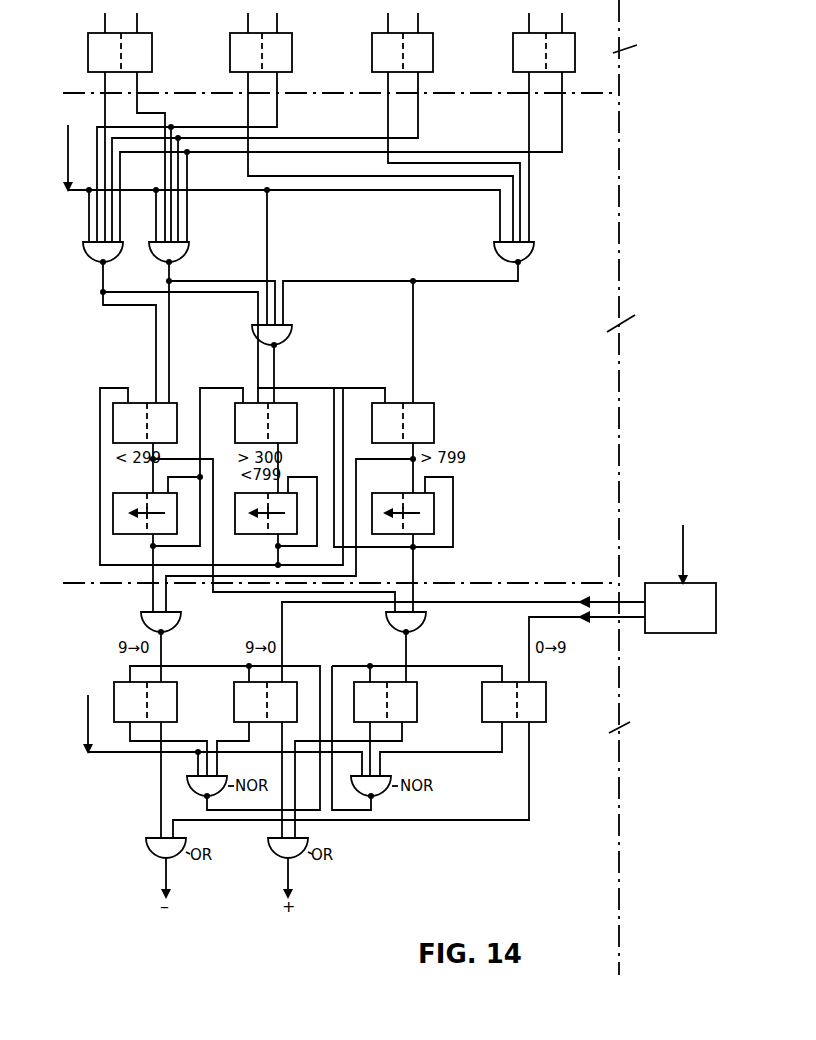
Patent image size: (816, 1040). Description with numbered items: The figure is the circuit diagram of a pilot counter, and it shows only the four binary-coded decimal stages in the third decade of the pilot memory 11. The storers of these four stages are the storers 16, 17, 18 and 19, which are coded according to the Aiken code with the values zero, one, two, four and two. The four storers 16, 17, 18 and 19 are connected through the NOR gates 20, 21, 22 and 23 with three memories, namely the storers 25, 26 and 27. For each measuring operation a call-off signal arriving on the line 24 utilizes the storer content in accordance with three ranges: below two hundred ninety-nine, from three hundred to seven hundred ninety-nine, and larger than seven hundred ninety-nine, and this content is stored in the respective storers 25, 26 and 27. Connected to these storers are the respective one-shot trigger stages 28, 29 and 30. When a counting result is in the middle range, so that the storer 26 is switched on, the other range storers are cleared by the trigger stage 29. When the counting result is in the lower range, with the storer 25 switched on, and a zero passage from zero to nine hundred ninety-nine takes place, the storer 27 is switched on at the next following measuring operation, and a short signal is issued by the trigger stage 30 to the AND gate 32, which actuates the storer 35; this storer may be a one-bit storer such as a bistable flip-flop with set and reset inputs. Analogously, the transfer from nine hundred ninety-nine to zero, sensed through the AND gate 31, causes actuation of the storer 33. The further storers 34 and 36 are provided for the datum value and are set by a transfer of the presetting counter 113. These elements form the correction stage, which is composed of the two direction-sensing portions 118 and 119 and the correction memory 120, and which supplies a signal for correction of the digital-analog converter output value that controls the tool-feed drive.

The storer 16 is at (152, 52).
The storer 17 is at (292, 52).
The storer 18 is at (433, 47).
The storer 19 is at (575, 50).
The pilot memory 11 is at (659, 46).
The line 24 is at (68, 175).
The NOR gate 20 is at (86, 246).
The NOR gate 21 is at (191, 252).
The NOR gate 22 is at (292, 335).
The NOR gate 23 is at (535, 256).
The direction-sensing portion 118 is at (669, 326).
The storer 25 is at (178, 409).
The storer 26 is at (304, 404).
The storer 27 is at (434, 413).
The one-shot trigger stage 28 is at (144, 529).
The one-shot trigger stage 29 is at (250, 535).
The one-shot trigger stage 30 is at (390, 493).
The presetting counter 113 is at (684, 544).
The direction-sensing portion 119 is at (680, 608).
The AND gate 31 is at (182, 622).
The AND gate 32 is at (427, 622).
The storer 33 is at (177, 700).
The storer 34 is at (234, 708).
The storer 35 is at (417, 713).
The storer 36 is at (546, 713).
The correction memory 120 is at (659, 740).